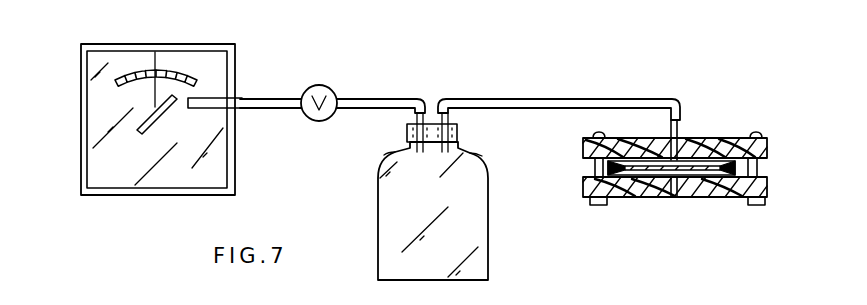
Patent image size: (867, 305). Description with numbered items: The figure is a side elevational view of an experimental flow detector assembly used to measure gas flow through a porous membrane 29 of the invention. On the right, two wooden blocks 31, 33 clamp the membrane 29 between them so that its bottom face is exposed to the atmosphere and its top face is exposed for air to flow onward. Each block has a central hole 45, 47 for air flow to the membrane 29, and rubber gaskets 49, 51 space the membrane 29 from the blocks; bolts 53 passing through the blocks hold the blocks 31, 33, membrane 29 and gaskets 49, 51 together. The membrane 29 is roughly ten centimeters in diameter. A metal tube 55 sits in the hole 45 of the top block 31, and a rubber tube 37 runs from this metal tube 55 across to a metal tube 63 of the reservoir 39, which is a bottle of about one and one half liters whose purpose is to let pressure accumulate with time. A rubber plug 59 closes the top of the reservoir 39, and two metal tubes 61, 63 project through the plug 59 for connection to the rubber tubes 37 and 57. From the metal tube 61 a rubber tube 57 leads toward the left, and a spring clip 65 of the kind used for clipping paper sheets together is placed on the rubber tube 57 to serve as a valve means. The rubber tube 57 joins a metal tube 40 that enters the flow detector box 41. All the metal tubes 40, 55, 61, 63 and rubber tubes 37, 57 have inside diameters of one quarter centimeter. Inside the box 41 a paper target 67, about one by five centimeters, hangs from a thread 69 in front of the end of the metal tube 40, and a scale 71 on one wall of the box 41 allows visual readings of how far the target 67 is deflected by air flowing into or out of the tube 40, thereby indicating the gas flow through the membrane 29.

The membrane 29 is at (692, 175).
The top block 31 is at (768, 140).
The bottom block 33 is at (768, 190).
The rubber tube 37 is at (595, 98).
The reservoir 39 is at (488, 250).
The metal tube 40 is at (211, 109).
The flow detector box 41 is at (81, 100).
The hole 45 is at (670, 140).
The hole 47 is at (673, 197).
The rubber gasket 49 is at (627, 160).
The rubber gasket 51 is at (607, 169).
The bolts 53 is at (596, 138).
The metal tube 55 is at (679, 130).
The rubber tube 57 is at (245, 99).
The rubber plug 59 is at (407, 131).
The metal tube 61 is at (398, 150).
The metal tube 63 is at (466, 148).
The spring clip 65 is at (320, 85).
The paper target 67 is at (143, 133).
The thread 69 is at (153, 58).
The scale 71 is at (178, 70).